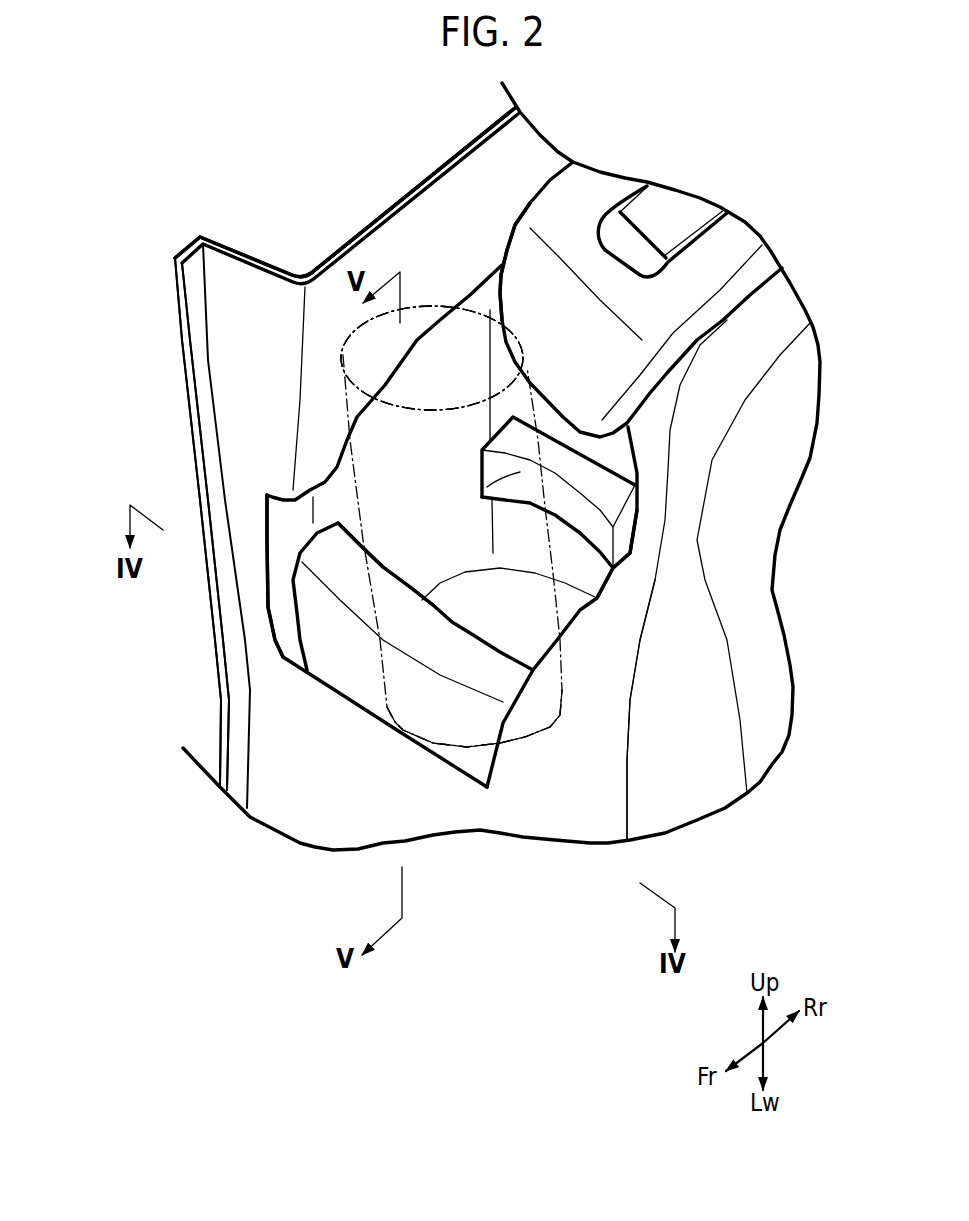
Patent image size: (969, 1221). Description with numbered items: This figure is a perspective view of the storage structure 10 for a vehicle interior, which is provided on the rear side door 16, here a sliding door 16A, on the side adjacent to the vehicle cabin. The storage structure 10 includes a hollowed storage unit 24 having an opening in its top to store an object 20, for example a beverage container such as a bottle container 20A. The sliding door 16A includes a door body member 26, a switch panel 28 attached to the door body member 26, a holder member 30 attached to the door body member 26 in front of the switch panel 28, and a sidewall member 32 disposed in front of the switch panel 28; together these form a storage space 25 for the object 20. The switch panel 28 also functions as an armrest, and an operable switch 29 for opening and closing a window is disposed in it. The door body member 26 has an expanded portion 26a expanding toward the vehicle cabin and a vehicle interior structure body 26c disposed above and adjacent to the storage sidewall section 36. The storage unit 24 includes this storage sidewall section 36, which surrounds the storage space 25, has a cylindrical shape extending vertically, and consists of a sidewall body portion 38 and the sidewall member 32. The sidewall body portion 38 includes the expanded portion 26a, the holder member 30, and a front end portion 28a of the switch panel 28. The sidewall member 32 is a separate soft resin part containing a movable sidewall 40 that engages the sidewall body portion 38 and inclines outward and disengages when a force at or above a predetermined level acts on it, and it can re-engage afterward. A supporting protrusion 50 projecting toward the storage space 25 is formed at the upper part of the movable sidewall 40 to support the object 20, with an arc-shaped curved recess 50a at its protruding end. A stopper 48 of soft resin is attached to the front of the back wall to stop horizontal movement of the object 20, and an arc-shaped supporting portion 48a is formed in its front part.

The storage structure 10 is at (253, 405).
The rear side door 16 is at (202, 100).
The sliding door 16A is at (242, 100).
The object to be stored 20 is at (342, 350).
The bottle container 20A is at (311, 358).
The storage unit 24 is at (650, 533).
The storage space 25 is at (593, 573).
The door body member 26 is at (208, 608).
The expanded portion 26a is at (603, 680).
The vehicle interior structure body 26c is at (412, 253).
The switch panel 28 is at (585, 195).
The front end portion 28a is at (538, 272).
The operable switch 29 is at (678, 205).
The holder member 30 is at (467, 357).
The sidewall member 32 is at (450, 720).
The storage sidewall section 36 is at (568, 896).
The sidewall body portion 38 is at (548, 710).
The movable sidewall 40 is at (342, 620).
The stopper 48 is at (545, 428).
The arc-shaped supporting portion 48a is at (487, 487).
The supporting protrusion 50 is at (427, 633).
The arc-shaped curved recess 50a is at (403, 585).